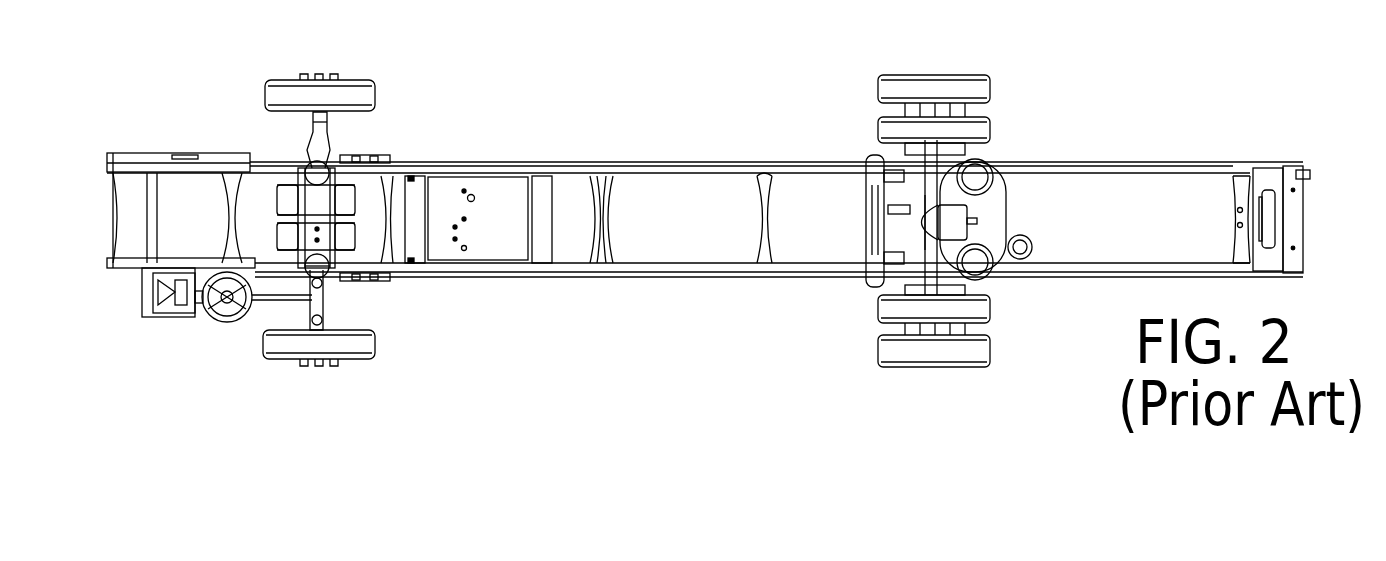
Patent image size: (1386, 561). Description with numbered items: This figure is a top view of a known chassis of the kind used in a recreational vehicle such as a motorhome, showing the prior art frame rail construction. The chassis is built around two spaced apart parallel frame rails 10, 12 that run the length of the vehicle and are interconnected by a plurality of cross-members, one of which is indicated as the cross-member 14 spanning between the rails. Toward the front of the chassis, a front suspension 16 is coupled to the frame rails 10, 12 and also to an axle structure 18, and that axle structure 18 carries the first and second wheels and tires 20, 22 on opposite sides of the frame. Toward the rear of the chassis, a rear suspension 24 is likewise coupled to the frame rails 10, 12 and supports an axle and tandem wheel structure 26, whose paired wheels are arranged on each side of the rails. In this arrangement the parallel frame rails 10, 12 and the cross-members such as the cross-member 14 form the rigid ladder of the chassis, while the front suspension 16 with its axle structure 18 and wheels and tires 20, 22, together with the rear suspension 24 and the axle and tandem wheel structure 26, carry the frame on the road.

The frame rail 10 is at (637, 268).
The frame rail 12 is at (660, 168).
The cross-member 14 is at (766, 204).
The front suspension 16 is at (375, 300).
The axle structure 18 is at (349, 375).
The wheel and tire 20 is at (263, 347).
The wheel and tire 22 is at (265, 92).
The rear suspension 24 is at (853, 300).
The axle and tandem wheel structure 26 is at (868, 378).